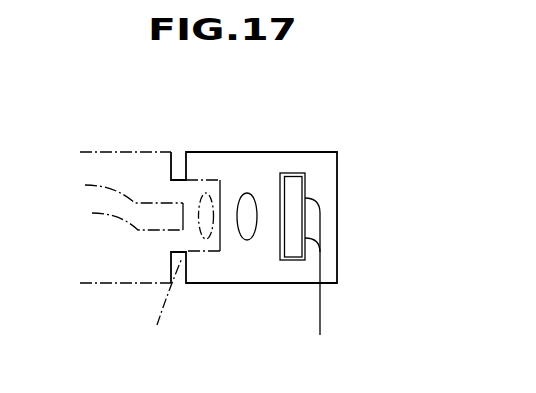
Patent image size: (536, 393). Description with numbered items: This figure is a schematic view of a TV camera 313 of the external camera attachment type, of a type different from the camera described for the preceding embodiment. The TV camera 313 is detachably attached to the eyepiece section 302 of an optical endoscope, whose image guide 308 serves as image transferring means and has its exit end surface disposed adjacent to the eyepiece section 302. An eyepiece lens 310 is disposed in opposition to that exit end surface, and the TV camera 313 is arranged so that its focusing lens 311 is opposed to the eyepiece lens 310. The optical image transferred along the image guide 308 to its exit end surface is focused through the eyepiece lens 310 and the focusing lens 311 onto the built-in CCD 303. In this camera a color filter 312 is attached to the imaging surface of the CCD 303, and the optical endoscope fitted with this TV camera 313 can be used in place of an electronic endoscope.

The eyepiece section 302 is at (160, 306).
The CCD 303 is at (292, 260).
The image guide 308 is at (117, 185).
The eyepiece lens 310 is at (205, 193).
The focusing lens 311 is at (253, 195).
The color filter 312 is at (280, 237).
The TV camera 313 is at (323, 150).